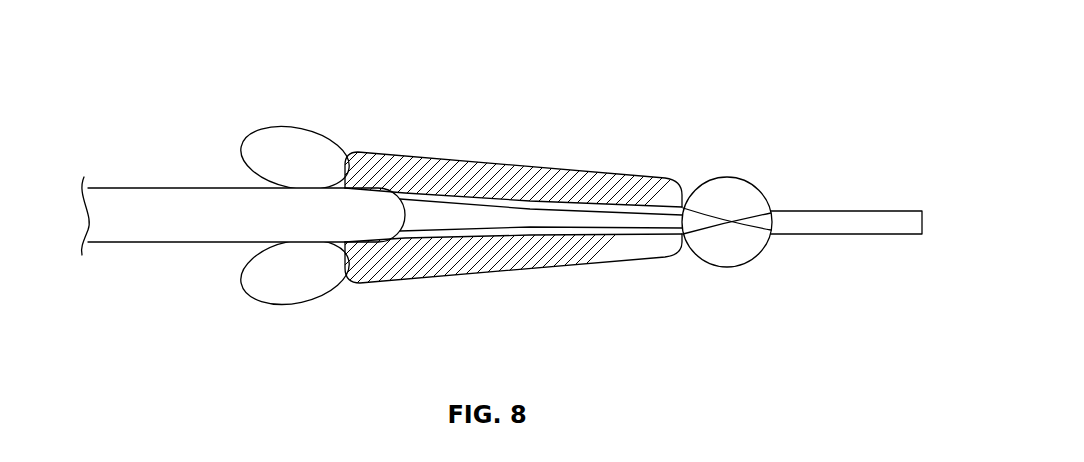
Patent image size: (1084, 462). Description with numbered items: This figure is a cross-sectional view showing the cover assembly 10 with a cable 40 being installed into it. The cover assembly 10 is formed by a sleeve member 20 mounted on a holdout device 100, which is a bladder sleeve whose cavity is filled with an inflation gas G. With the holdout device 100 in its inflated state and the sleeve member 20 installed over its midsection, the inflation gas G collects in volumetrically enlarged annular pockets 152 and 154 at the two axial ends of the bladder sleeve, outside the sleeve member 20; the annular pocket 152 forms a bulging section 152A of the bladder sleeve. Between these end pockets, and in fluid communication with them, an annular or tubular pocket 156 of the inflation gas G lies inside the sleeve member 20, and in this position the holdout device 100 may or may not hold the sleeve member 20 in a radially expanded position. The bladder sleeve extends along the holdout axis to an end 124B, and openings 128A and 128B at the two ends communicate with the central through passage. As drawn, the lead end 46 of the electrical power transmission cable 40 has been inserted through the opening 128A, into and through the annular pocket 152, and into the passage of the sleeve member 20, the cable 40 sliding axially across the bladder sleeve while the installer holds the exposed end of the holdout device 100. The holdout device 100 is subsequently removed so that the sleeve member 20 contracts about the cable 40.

The cover assembly 10 is at (747, 83).
The sleeve member 20 is at (468, 148).
The cable 40 is at (147, 208).
The lead end 46 is at (402, 217).
The inflation gas G is at (262, 147).
The holdout device 100 is at (769, 207).
The end 124B is at (920, 210).
The opening 128A is at (241, 257).
The opening 128B is at (927, 223).
The annular pocket 152 is at (271, 167).
The bulging section 152A is at (285, 308).
The annular pocket 154 is at (707, 213).
The tubular pocket 156 is at (572, 208).